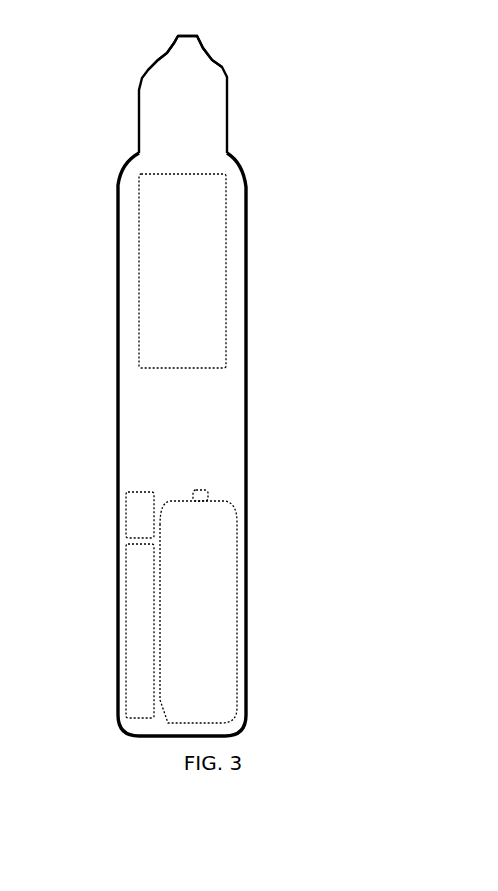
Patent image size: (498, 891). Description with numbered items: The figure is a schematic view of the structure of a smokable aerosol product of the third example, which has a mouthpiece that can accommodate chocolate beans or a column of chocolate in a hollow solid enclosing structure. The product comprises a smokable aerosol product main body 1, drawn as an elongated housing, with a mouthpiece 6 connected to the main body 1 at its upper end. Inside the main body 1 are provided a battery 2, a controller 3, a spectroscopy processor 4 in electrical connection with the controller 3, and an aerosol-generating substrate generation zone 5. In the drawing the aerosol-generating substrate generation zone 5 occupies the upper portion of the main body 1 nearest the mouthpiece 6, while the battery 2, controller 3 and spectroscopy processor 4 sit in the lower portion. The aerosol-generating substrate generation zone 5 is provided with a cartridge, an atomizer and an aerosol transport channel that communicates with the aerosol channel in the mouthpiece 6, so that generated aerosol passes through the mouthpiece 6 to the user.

The smokable aerosol product main body 1 is at (272, 333).
The battery 2 is at (198, 606).
The controller 3 is at (140, 631).
The spectroscopy processor 4 is at (140, 515).
The aerosol-generating substrate generation zone 5 is at (182, 271).
The mouthpiece 6 is at (123, 88).